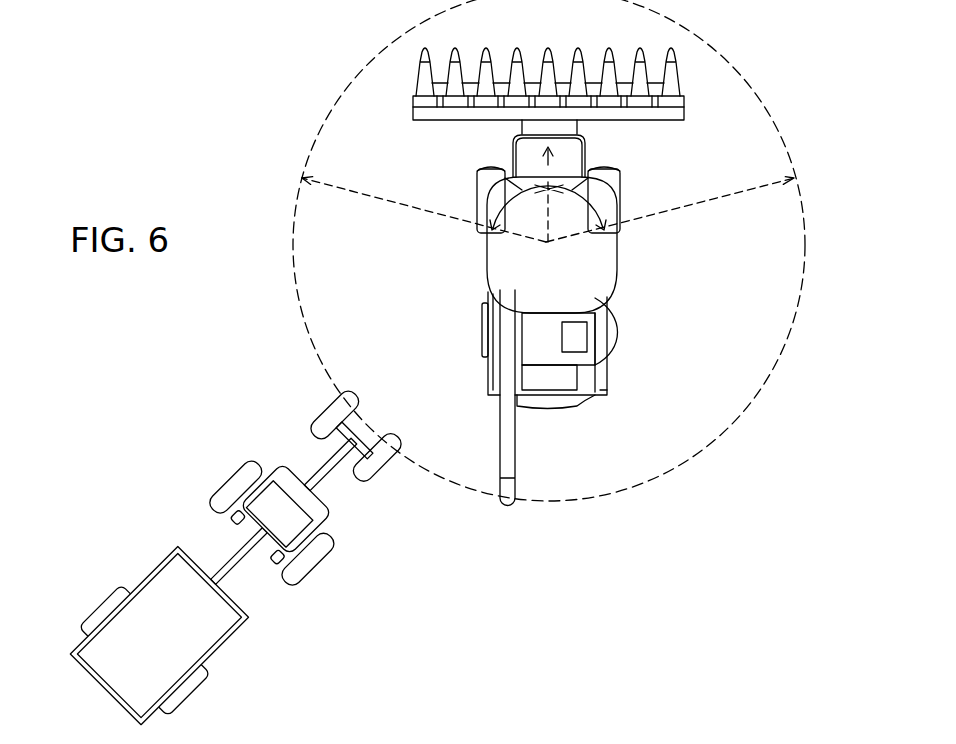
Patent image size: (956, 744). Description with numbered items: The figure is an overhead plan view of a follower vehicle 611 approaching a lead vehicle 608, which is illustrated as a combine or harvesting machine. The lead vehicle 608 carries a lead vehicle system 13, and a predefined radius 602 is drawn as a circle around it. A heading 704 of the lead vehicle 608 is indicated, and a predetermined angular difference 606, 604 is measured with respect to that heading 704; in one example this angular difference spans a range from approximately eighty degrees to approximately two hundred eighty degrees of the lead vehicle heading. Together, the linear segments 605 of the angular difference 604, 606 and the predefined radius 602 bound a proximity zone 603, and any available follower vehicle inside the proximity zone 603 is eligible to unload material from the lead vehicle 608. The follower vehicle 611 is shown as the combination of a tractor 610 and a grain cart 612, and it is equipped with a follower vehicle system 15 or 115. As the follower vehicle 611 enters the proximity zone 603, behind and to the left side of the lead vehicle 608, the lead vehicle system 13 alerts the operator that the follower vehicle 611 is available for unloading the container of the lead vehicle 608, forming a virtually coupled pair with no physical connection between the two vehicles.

The predefined radius 602 is at (735, 70).
The proximity zone 603 is at (382, 333).
The predetermined angular difference 604 is at (613, 178).
The linear segments 605 is at (391, 205).
The predetermined angular difference 606 is at (480, 176).
The lead vehicle 608 is at (578, 153).
The heading 704 is at (549, 215).
The lead vehicle system 13 is at (580, 338).
The tractor 610 is at (329, 507).
The follower vehicle 611 is at (262, 527).
The grain cart 612 is at (147, 572).
The follower vehicle system 15 is at (369, 551).
The follower vehicle system 115 is at (297, 518).